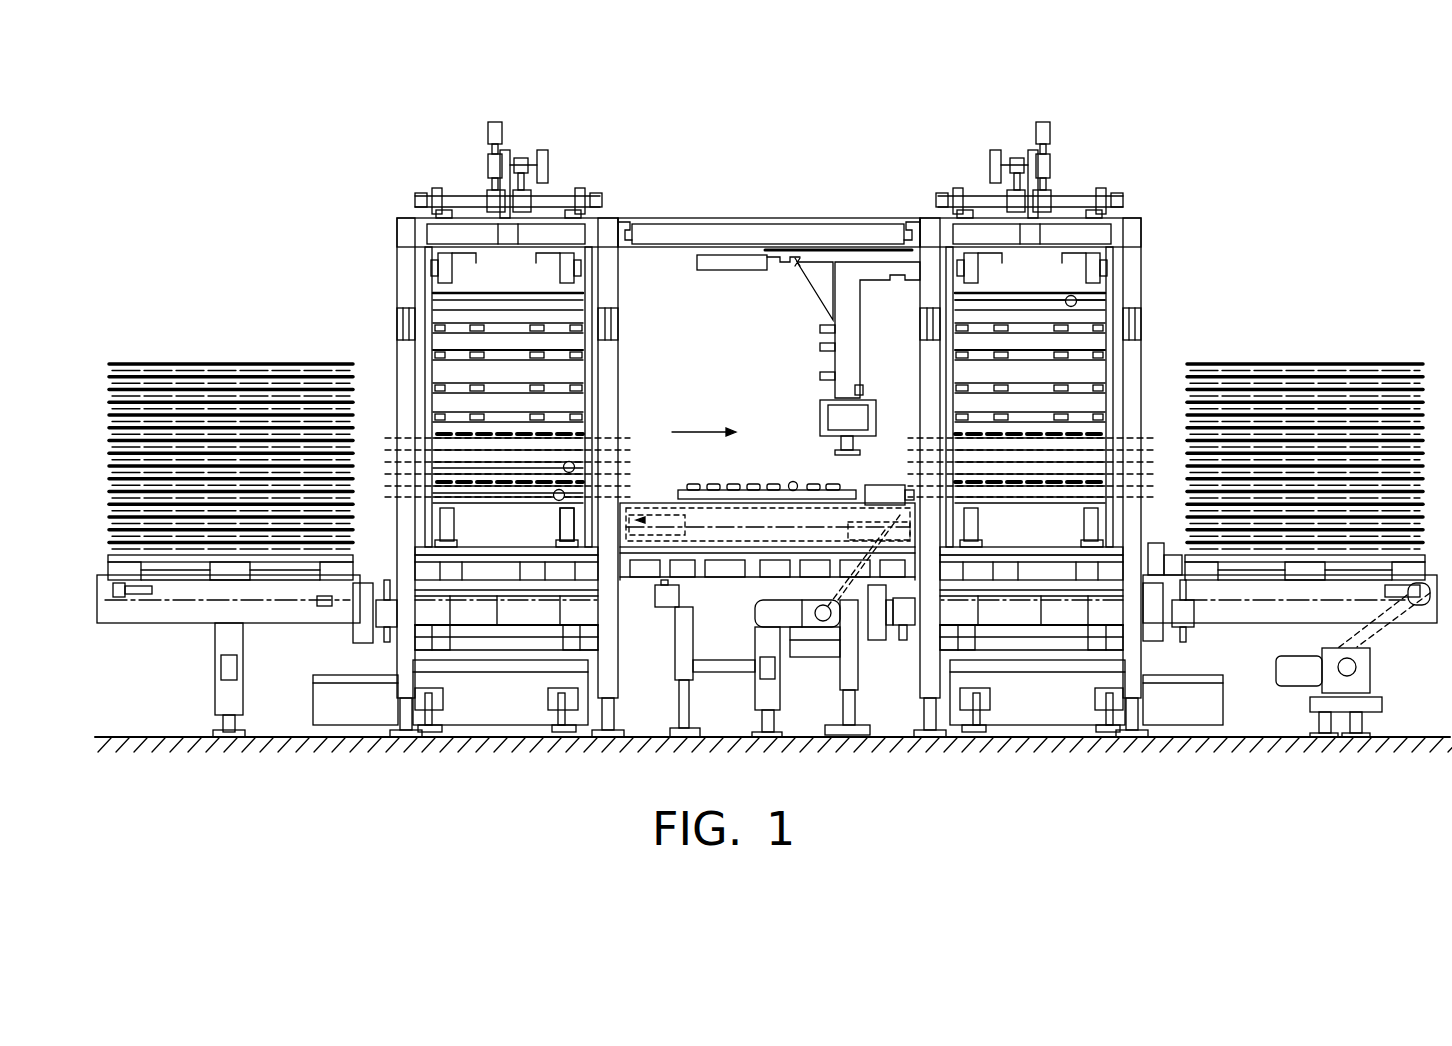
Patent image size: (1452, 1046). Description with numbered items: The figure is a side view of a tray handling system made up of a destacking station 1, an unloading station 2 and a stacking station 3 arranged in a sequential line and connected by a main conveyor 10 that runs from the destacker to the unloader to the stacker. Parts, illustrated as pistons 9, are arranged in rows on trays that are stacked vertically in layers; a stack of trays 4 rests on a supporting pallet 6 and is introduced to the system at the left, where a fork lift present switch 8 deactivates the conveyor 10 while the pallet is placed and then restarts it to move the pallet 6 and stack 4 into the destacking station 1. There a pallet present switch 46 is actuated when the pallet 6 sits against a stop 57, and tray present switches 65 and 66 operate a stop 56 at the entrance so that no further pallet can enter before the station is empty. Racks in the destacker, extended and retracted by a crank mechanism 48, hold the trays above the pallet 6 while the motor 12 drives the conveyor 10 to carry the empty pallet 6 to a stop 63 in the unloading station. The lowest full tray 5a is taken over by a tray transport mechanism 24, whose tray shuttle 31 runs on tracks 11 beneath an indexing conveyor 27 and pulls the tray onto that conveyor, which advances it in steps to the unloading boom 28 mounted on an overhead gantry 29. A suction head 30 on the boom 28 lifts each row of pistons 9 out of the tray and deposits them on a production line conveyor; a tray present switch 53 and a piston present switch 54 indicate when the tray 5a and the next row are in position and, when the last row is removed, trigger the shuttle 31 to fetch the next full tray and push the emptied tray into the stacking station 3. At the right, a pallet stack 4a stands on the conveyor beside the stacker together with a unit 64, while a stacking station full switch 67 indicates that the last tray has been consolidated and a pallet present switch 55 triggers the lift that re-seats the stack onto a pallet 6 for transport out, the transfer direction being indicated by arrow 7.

The destacking station 1 is at (355, 213).
The unloading station 2 is at (728, 200).
The stacking station 3 is at (1163, 190).
The stack of trays 4 is at (160, 323).
The right pallet stack station 4a is at (1295, 345).
The full tray 5a is at (338, 400).
The pallet 6 is at (340, 560).
The transfer device 7 is at (748, 360).
The fork lift present switch 8 is at (122, 597).
The pistons 9 is at (268, 372).
The main conveyor 10 is at (195, 580).
The tracks 11 is at (670, 515).
The motor 12 is at (1370, 679).
The tray transport mechanism 24 is at (673, 510).
The indexing conveyor 27 is at (758, 503).
The unloading boom 28 is at (852, 382).
The overhead gantry 29 is at (798, 268).
The suction head 30 is at (826, 418).
The tray shuttle 31 is at (758, 515).
The pallet present switch 46 is at (590, 520).
The crank mechanism 48 is at (521, 160).
The tray present switch 53 is at (831, 489).
The piston present switch 54 is at (848, 485).
The pallet present switch 55 is at (1157, 543).
The stop 56 is at (352, 632).
The stop 57 is at (665, 591).
The stop 63 is at (908, 642).
The lifting unit 64 is at (1183, 637).
The tray present switch 65 is at (575, 462).
The tray present switch 66 is at (553, 498).
The stacking station full switch 67 is at (1067, 300).